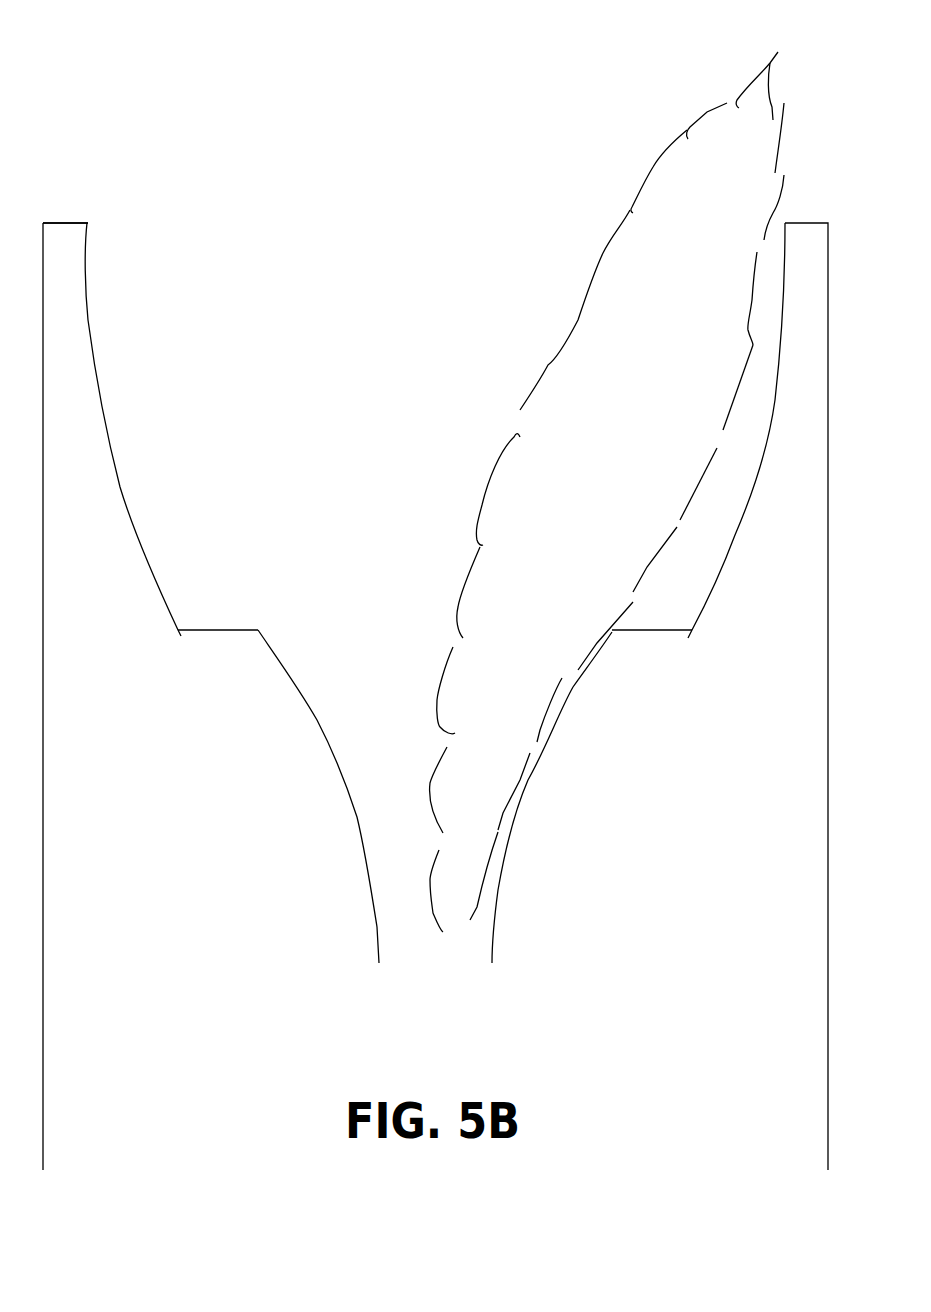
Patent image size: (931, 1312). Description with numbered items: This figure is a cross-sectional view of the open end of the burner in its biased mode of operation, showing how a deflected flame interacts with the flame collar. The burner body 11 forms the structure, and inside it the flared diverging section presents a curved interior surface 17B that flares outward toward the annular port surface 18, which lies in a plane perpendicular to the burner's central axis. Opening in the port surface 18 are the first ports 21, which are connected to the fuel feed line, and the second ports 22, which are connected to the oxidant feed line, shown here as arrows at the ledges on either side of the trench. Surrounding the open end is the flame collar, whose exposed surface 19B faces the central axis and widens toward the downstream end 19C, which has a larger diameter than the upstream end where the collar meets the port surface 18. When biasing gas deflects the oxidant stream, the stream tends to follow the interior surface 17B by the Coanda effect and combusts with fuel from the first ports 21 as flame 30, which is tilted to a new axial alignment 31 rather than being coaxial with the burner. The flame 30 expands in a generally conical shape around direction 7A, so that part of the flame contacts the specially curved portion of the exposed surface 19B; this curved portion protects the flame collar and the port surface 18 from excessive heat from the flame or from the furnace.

The burner body 11 is at (694, 832).
The downstream end of flame collar 19C is at (88, 222).
The exposed surface of flame collar 19B is at (102, 417).
The port surface 18 is at (193, 630).
The first ports 21 is at (218, 632).
The second ports 22 is at (657, 632).
The interior surface of flared diverging section 17B is at (578, 763).
The flame 30 is at (694, 282).
The new axial alignment 31 is at (547, 560).
The direction of flame expansion 7A is at (617, 408).